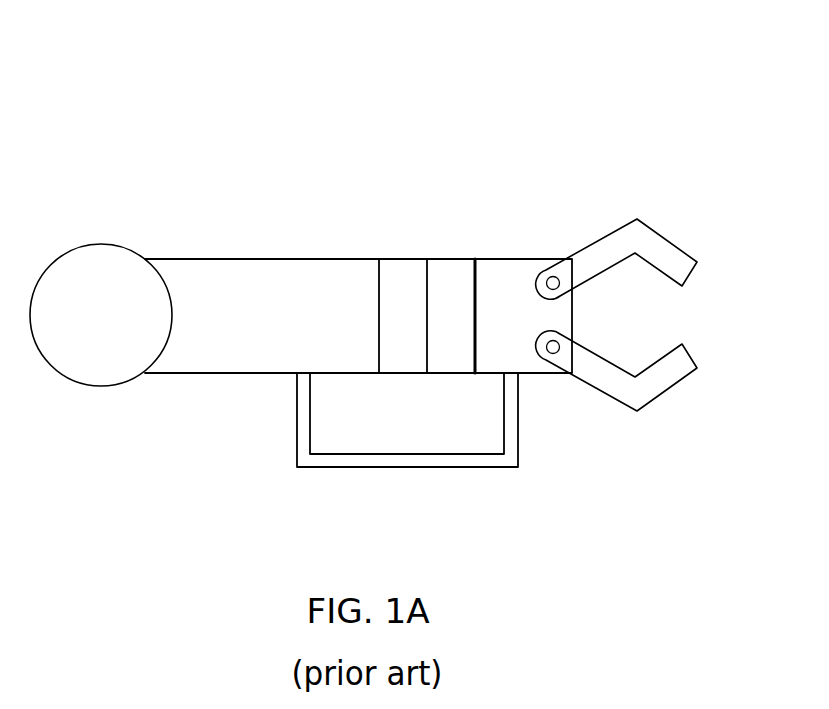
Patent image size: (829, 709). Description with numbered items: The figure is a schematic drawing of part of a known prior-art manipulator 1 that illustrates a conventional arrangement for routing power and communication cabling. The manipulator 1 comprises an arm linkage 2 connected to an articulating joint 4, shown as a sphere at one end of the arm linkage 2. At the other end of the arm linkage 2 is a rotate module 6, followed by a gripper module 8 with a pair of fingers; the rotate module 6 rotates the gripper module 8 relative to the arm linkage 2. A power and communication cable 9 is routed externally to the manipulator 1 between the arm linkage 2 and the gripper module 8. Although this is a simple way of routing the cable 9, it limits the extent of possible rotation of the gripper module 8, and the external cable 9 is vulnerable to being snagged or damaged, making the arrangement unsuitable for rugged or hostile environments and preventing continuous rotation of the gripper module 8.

The manipulator 1 is at (645, 83).
The arm linkage 2 is at (270, 258).
The articulating joint 4 is at (108, 245).
The rotate module 6 is at (378, 230).
The gripper module 8 is at (702, 230).
The power and communication cable 9 is at (518, 455).